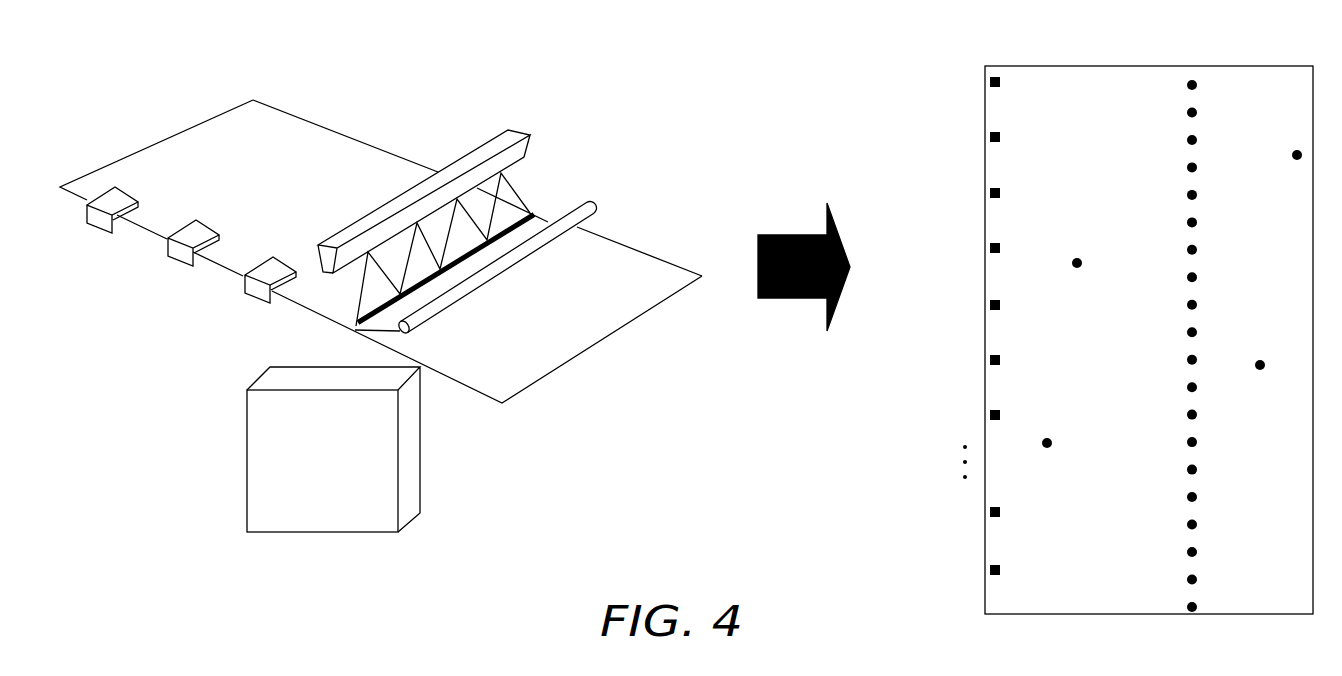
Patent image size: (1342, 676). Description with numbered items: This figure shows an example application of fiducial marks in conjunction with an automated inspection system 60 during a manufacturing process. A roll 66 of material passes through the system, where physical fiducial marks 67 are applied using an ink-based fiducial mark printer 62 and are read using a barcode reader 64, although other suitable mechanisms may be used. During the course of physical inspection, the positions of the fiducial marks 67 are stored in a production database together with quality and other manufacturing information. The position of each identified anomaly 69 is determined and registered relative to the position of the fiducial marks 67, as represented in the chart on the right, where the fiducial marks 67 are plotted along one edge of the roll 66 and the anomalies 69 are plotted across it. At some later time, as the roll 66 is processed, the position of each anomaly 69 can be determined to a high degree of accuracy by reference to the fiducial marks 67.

The automated inspection system 60 is at (247, 442).
The ink-based fiducial mark printer 62 is at (184, 261).
The barcode reader 64 is at (259, 296).
The roll 66 is at (648, 268).
The fiducial marks 67 is at (997, 77).
The anomalies 69 is at (1192, 78).